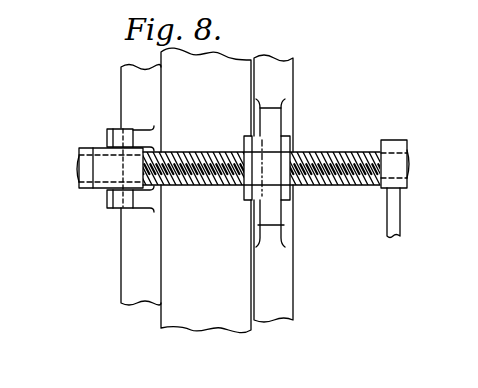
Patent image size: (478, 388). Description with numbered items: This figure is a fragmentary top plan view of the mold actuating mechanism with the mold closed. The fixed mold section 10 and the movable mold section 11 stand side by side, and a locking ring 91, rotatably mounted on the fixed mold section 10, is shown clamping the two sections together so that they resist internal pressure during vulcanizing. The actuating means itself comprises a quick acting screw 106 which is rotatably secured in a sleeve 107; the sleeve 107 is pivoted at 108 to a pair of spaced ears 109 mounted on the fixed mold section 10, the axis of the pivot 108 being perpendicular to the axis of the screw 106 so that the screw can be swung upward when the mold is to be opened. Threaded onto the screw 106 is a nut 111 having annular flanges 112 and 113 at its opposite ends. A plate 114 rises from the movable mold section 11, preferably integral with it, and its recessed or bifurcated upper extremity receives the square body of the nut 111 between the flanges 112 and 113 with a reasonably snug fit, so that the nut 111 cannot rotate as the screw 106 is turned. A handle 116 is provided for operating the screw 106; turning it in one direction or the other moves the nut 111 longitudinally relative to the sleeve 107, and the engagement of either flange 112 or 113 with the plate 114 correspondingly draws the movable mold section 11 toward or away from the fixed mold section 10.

The fixed mold section 10 is at (135, 291).
The movable mold section 11 is at (278, 291).
The locking ring 91 is at (213, 309).
The quick acting screw 106 is at (318, 152).
The sleeve 107 is at (100, 188).
The pivot 108 is at (107, 207).
The spaced ears 109 is at (110, 131).
The nut 111 is at (282, 201).
The annular flange 112 is at (243, 198).
The annular flange 113 is at (274, 191).
The plate 114 is at (275, 227).
The handle 116 is at (393, 215).